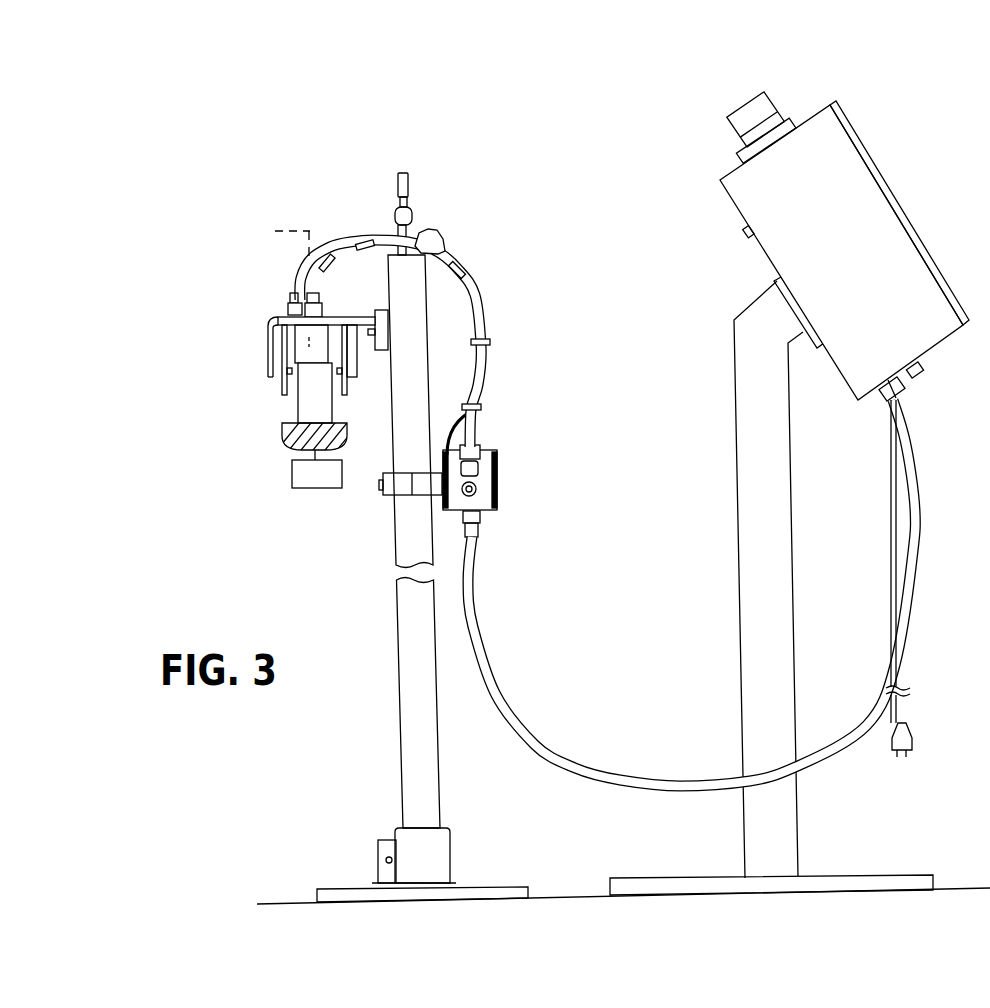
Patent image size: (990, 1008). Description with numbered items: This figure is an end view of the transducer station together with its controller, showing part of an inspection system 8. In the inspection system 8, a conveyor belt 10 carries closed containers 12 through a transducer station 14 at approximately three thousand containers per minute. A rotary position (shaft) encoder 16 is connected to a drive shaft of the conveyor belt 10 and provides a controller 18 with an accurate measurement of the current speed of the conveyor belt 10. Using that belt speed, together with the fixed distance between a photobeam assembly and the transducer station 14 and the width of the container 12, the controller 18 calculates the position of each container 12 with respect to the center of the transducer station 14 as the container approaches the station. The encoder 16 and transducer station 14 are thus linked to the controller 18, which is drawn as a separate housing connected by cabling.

The dispensing system 8 is at (638, 92).
The dispensing disk 10 is at (282, 437).
The pump body 12 is at (297, 405).
The pump unit 14 is at (246, 319).
The sensor block 16 is at (315, 488).
The control box 18 is at (860, 270).